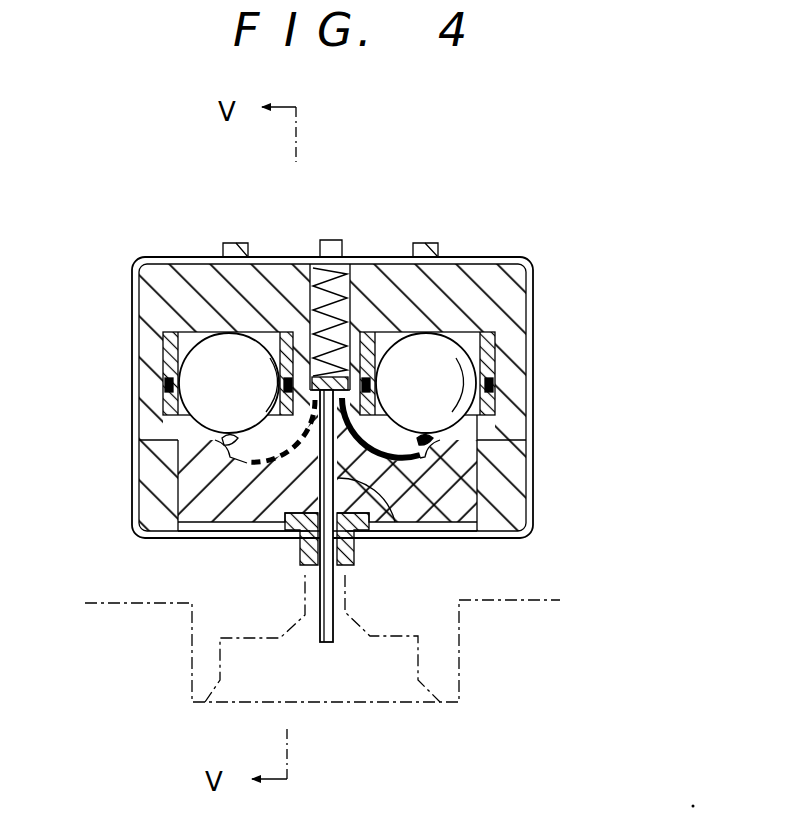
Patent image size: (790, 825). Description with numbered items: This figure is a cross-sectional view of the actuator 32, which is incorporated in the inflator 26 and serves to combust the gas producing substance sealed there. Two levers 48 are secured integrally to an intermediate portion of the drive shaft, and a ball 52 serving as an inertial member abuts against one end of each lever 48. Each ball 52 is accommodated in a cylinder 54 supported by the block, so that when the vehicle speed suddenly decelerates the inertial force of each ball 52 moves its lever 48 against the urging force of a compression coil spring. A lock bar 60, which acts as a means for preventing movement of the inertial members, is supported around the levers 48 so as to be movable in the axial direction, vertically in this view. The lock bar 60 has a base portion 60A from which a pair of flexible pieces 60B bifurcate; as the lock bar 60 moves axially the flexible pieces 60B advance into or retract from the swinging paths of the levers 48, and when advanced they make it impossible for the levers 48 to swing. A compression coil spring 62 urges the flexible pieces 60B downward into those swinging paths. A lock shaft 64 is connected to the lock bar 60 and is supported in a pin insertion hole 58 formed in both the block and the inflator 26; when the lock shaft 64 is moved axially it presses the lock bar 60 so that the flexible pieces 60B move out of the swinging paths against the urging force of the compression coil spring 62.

The inflator 26 is at (95, 606).
The actuator 32 is at (546, 255).
The lever 48 is at (225, 442).
The ball 52 is at (250, 355).
The cylinder 54 is at (172, 350).
The pin insertion hole 58 is at (385, 497).
The lock bar 60 is at (288, 428).
The base portion 60A is at (370, 377).
The flexible pieces 60B is at (243, 500).
The compression coil spring 62 is at (356, 262).
The lock shaft 64 is at (345, 563).